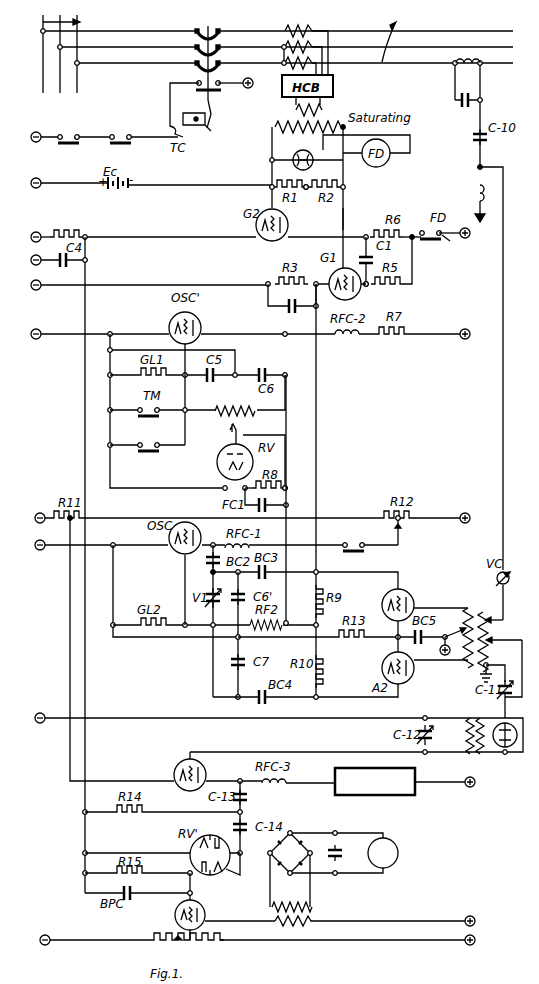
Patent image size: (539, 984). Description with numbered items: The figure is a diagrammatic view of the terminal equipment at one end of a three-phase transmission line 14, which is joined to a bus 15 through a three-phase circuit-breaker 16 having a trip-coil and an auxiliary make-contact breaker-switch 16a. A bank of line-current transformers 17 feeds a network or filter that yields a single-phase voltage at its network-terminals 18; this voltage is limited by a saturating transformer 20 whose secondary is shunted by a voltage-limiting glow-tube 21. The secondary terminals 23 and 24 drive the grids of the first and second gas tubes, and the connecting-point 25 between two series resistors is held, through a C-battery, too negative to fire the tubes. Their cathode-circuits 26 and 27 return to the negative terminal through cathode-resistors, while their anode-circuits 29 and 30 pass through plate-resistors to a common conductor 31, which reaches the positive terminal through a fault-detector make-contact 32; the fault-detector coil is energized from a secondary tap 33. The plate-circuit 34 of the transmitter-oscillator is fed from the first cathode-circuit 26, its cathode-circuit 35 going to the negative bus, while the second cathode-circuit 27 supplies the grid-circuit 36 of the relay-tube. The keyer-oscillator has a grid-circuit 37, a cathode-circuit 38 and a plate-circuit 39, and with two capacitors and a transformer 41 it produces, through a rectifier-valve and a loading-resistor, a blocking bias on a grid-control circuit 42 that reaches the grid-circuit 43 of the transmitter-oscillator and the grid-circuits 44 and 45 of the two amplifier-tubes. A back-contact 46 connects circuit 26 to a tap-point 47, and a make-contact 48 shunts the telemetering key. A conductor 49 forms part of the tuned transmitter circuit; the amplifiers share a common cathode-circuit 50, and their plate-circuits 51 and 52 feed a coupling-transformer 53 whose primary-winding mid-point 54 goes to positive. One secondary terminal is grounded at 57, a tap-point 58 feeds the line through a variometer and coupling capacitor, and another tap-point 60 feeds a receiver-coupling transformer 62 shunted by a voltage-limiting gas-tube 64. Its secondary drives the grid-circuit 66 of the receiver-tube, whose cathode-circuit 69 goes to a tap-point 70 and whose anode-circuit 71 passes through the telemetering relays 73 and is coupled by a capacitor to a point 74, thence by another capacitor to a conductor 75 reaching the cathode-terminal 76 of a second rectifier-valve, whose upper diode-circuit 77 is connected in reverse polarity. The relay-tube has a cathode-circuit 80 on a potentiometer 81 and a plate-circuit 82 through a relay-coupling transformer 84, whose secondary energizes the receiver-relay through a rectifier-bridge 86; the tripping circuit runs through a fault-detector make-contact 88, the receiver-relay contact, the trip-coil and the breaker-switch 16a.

The three-phase transmission line 14 is at (390, 35).
The bus 15 is at (71, 23).
The three-phase circuit-breaker 16 is at (207, 56).
The auxiliary make-contact breaker-switch 16a is at (221, 88).
The bank of line-current transformers 17 is at (305, 42).
The network-terminals 18 is at (326, 105).
The saturating transformer 20 is at (306, 120).
The voltage-limiting glow-tube 21 is at (300, 152).
The secondary terminal 23 is at (343, 222).
The secondary terminal 24 is at (270, 161).
The connecting-point 25 is at (309, 186).
The cathode-circuit 26 is at (317, 292).
The cathode-circuit 27 is at (87, 236).
The anode-circuit 29 is at (368, 287).
The anode-circuit 30 is at (366, 235).
The common conductor 31 is at (413, 258).
The make-contact of fault-detector 32 is at (449, 241).
The secondary tap 33 is at (322, 132).
The plate-circuit 34 is at (213, 542).
The cathode-circuit 35 is at (114, 544).
The grid-circuit 36 is at (193, 893).
The grid-circuit 37 is at (188, 409).
The cathode-circuit 38 is at (111, 333).
The plate-circuit 39 is at (285, 333).
The transformer 41 is at (248, 417).
The grid-control circuit 42 is at (288, 487).
The grid-circuit 43 is at (184, 623).
The grid-circuit 44 is at (382, 598).
The grid-circuit 45 is at (320, 697).
The back-contact of fault-detector 46 is at (362, 549).
The tap-point 47 is at (400, 530).
The fault-detector make-contact 48 is at (159, 448).
The conductor 49 is at (211, 573).
The common cathode-circuit 50 is at (390, 639).
The plate-circuit 51 is at (432, 606).
The plate-circuit 52 is at (431, 660).
The coupling-transformer 53 is at (470, 606).
The primary-winding mid-point 54 is at (455, 625).
The grounded point 57 is at (483, 668).
The tap-point 58 is at (492, 624).
The tap-point 60 is at (500, 643).
The receiver-coupling transformer 62 is at (475, 752).
The voltage-limiting gas-tube 64 is at (513, 750).
The grid-circuit 66 is at (213, 752).
The cathode-circuit 69 is at (110, 781).
The tap-point 70 is at (70, 534).
The anode-circuit 71 is at (236, 780).
The telemetering relays 73 is at (364, 796).
The point 74 is at (243, 811).
The conductor 75 is at (243, 852).
The cathode-terminal 76 is at (240, 875).
The upper diode-circuit 77 is at (148, 852).
The cathode-circuit 80 is at (178, 936).
The potentiometer 81 is at (222, 938).
The plate-circuit 82 is at (246, 918).
The relay-coupling transformer 84 is at (313, 911).
The rectifier-bridge 86 is at (287, 833).
The make-contact of fault-detector 88 is at (78, 141).